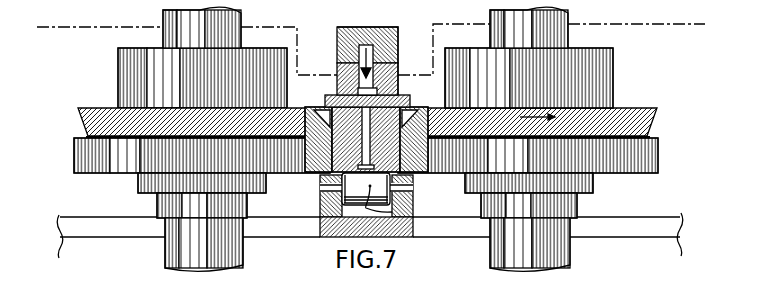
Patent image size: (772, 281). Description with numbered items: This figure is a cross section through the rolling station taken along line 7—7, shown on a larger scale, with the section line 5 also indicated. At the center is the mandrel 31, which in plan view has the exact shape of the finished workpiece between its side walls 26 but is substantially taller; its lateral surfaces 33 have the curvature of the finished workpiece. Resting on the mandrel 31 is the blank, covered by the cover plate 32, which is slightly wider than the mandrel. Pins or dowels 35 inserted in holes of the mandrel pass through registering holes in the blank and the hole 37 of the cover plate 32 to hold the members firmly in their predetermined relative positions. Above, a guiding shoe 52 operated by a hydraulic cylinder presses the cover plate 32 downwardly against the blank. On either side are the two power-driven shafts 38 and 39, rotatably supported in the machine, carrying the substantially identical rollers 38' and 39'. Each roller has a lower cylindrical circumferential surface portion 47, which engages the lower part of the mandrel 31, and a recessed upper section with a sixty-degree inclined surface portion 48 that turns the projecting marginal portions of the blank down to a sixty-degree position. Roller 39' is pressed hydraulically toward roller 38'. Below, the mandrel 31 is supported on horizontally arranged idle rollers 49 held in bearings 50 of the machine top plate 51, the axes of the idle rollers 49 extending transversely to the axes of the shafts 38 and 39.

The section line 5- 5 is at (705, 55).
The section line 7 is at (340, 12).
The side walls 26 is at (414, 110).
The mandrel 31 is at (390, 153).
The cover plate 32 is at (338, 88).
The lateral surfaces 33 is at (330, 173).
The pins or dowels 35 is at (400, 97).
The hole 37 is at (358, 91).
The shaft 38 is at (550, 139).
The roller 38' is at (550, 78).
The shaft 39 is at (184, 139).
The roller 39' is at (186, 78).
The cylindrical circumferential surface portion 47 is at (75, 165).
The inclined surface portion 48 is at (82, 124).
The idle rollers 49 is at (413, 206).
The bearings 50 is at (319, 204).
The machine top plate 51 is at (405, 228).
The guiding shoe 52 is at (337, 62).